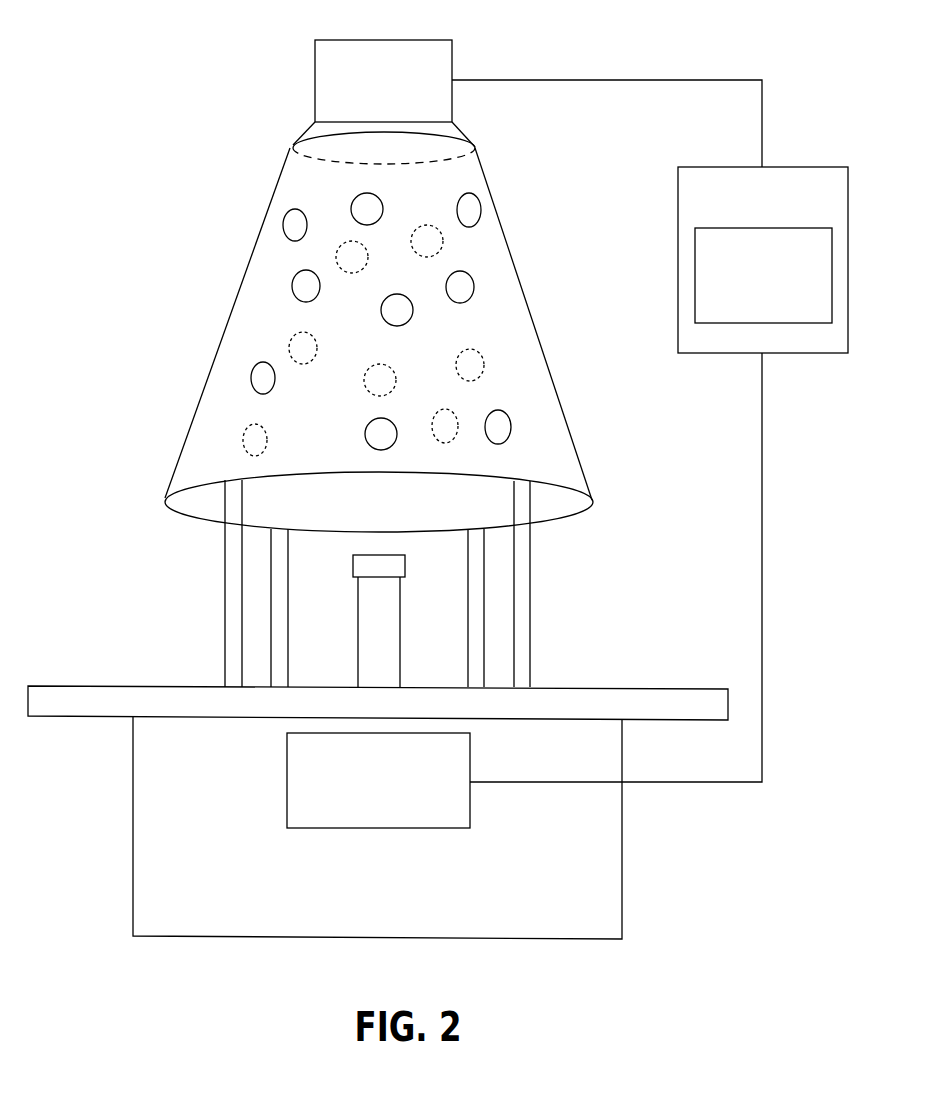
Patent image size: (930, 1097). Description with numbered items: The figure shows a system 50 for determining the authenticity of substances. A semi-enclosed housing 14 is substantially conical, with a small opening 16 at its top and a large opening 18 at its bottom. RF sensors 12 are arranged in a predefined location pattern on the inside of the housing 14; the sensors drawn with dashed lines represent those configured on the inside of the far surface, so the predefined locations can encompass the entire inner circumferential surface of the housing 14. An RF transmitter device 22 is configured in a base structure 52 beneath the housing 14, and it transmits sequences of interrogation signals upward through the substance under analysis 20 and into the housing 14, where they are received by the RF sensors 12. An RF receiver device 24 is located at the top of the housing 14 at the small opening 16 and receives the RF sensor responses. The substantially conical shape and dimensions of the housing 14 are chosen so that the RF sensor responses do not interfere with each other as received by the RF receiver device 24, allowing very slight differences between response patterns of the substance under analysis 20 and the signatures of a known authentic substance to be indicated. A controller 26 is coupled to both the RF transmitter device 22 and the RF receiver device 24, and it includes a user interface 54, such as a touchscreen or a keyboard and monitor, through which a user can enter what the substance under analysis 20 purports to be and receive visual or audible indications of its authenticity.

The system 50 is at (150, 61).
The RF receiver device 24 is at (315, 53).
The controller 26 is at (685, 167).
The user interface 54 is at (695, 273).
The semi-enclosed housing 14 is at (378, 311).
The small opening 16 is at (427, 151).
The RF sensors 12 is at (245, 342).
The large opening 18 is at (485, 512).
The substance under analysis 20 is at (358, 610).
The base structure 52 is at (133, 793).
The RF transmitter device 22 is at (287, 767).